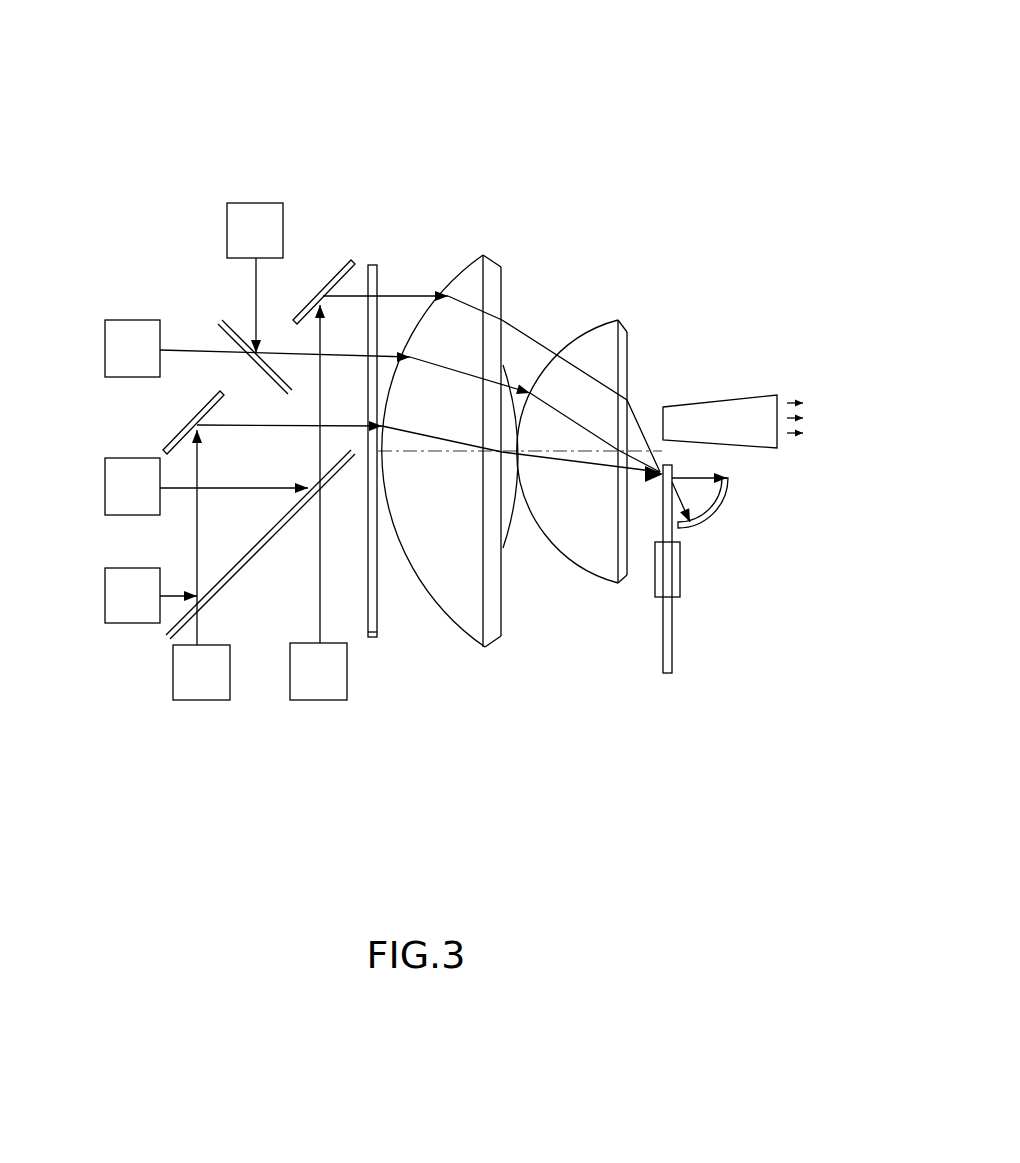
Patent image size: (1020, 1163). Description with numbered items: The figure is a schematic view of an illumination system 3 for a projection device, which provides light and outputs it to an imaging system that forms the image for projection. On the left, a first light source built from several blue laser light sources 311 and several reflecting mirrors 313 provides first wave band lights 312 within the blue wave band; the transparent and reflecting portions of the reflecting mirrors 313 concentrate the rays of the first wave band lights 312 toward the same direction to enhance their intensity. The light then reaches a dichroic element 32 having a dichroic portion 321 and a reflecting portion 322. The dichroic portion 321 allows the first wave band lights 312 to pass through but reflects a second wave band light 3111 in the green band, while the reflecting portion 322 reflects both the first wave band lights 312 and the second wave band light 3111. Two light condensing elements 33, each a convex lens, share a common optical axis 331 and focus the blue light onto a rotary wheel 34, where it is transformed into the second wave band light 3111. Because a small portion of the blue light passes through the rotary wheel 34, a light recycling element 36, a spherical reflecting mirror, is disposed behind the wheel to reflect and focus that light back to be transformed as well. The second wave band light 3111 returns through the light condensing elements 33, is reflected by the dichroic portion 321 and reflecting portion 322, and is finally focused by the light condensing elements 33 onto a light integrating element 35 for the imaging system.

The illumination system 3 is at (531, 95).
The blue laser light source 311 is at (118, 343).
The first wave band light 312 is at (187, 347).
The reflecting mirror 313 is at (190, 413).
The dichroic portion 321 is at (378, 265).
The reflecting portion 322 is at (373, 640).
The dichroic element 32 is at (385, 613).
The light condensing element 33 is at (468, 290).
The optical axis 331 is at (513, 453).
The second wave band light 3111 is at (540, 335).
The rotary wheel 34 is at (673, 630).
The light integrating element 35 is at (752, 415).
The light recycling element 36 is at (720, 517).